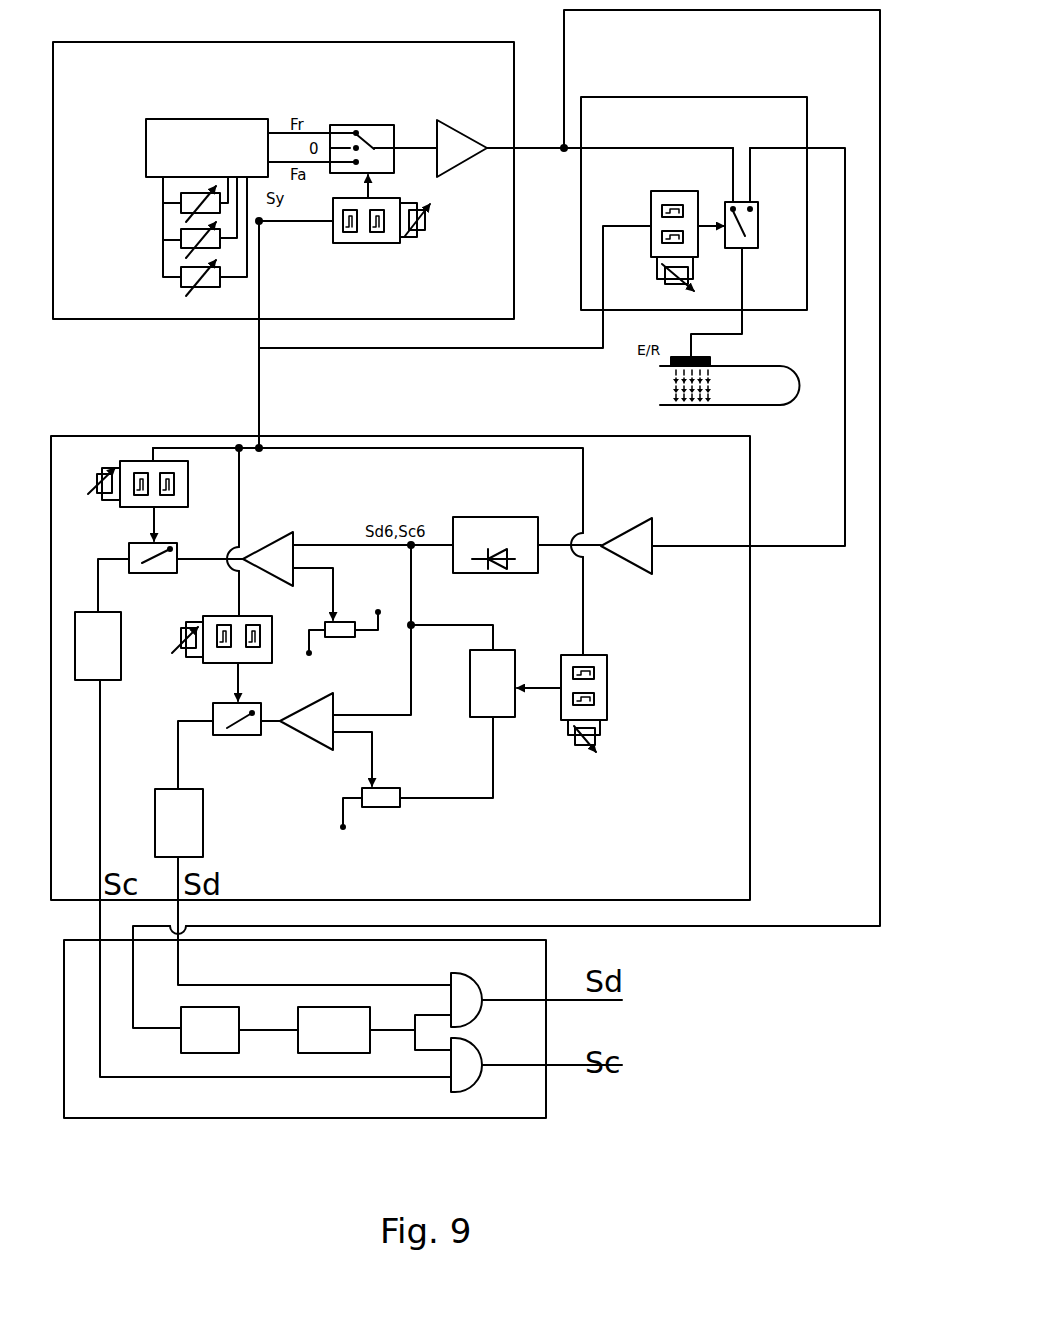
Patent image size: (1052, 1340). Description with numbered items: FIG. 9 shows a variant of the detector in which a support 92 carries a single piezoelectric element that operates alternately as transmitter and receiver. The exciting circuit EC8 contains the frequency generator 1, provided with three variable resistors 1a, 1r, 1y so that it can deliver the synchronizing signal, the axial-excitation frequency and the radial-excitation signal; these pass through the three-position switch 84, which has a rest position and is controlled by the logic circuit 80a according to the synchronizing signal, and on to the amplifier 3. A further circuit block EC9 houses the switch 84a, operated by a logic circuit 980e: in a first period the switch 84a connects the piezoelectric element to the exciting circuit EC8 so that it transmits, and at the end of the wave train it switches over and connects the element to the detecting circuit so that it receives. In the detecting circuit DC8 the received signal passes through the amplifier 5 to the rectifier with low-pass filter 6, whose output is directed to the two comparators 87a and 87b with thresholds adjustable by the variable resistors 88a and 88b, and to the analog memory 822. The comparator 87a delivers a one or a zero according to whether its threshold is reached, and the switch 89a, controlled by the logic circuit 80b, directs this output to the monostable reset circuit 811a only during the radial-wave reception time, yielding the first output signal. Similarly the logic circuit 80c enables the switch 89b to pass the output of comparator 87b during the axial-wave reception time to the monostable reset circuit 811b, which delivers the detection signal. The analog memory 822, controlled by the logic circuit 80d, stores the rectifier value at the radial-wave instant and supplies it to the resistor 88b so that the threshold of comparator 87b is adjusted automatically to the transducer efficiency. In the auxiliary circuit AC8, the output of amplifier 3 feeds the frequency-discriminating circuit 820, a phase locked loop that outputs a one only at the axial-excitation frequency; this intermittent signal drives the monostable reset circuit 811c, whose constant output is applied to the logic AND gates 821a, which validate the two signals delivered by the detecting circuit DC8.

The frequency generator 1 is at (212, 122).
The variable resistor 1a is at (181, 203).
The variable resistor 1r is at (181, 240).
The variable resistor 1y is at (181, 276).
The switch 84 is at (378, 128).
The amplifier 3 is at (455, 133).
The logic circuit 80a is at (393, 235).
The pulse generator 980e is at (651, 225).
The switch 84a is at (757, 240).
The support 92 is at (795, 374).
The logic circuit 80b is at (125, 465).
The switch 89a is at (175, 565).
The comparator 87a is at (272, 546).
The rectifier with low-pass filter 6 is at (478, 518).
The amplifier 5 is at (618, 535).
The variable resistor 88a is at (345, 625).
The logic circuit 80c is at (209, 662).
The monostable reset circuit 811a is at (107, 680).
The comparator 87b is at (325, 725).
The switch 89b is at (243, 735).
The monostable reset circuit 811b is at (203, 800).
The variable resistor 88b is at (385, 808).
The analog memory 822 is at (497, 717).
The logic circuit 80d is at (608, 722).
The frequency-discriminating circuit 820 is at (233, 1043).
The monostable reset circuit 811c is at (348, 1043).
The logic AND gate 821a is at (475, 989).
The exciting circuit EC8 is at (507, 93).
The emitter circuit EC9 is at (800, 112).
The detecting circuit DC8 is at (738, 690).
The auxiliary circuit AC8 is at (535, 1095).